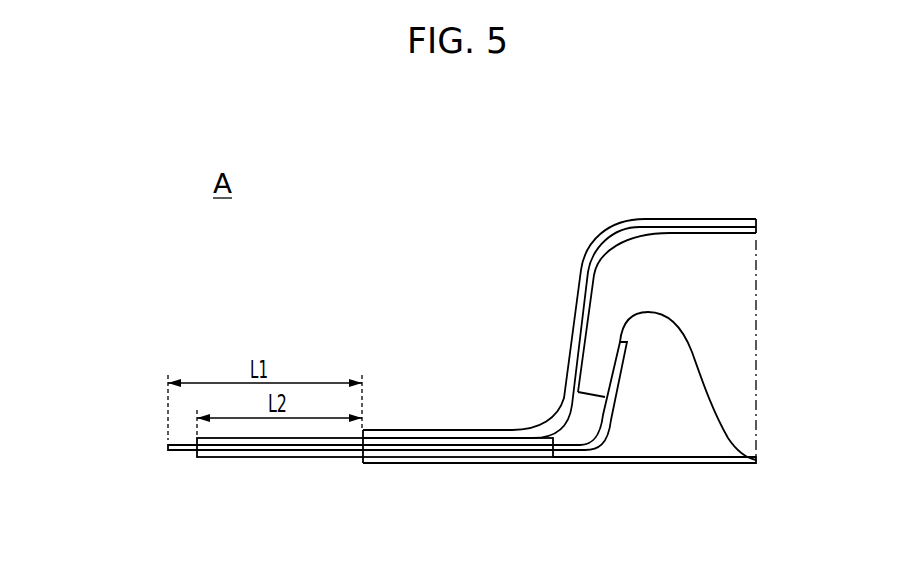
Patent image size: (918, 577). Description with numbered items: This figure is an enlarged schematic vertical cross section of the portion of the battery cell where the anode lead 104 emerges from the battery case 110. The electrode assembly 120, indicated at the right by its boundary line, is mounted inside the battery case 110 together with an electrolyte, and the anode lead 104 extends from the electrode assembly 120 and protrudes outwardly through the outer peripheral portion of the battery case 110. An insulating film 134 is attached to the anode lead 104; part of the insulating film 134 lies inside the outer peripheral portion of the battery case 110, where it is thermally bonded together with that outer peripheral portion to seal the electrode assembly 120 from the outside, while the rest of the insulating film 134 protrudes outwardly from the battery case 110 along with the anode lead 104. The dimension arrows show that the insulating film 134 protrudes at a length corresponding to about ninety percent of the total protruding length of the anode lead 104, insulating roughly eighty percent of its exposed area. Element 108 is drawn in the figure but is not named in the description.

The anode lead 104 is at (168, 447).
The insulating film 134 is at (238, 443).
The bent cover member 108 is at (602, 325).
The battery case 110 is at (703, 467).
The electrode assembly 120 is at (728, 313).